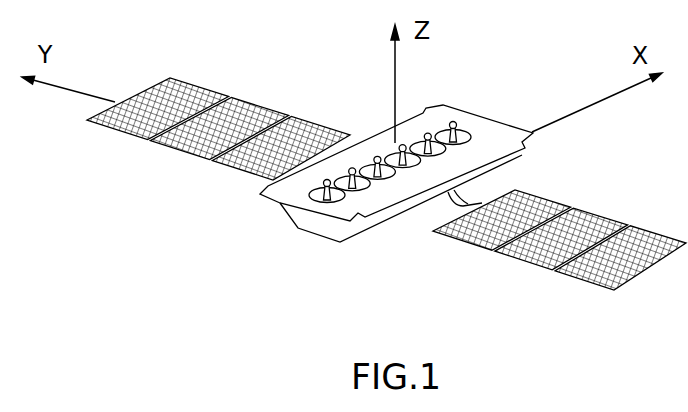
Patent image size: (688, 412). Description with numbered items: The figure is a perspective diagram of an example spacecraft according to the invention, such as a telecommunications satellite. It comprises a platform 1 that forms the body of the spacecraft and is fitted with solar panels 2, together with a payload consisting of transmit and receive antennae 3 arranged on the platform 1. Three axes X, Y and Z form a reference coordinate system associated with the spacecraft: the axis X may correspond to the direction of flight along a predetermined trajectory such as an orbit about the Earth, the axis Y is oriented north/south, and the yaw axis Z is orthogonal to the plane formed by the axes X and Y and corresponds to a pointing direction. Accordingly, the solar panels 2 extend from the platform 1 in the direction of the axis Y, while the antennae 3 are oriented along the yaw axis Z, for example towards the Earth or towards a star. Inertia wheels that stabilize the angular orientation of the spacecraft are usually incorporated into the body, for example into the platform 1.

The platform 1 is at (391, 192).
The solar panels 2 is at (178, 150).
The transmit and receive antennae 3 is at (490, 113).